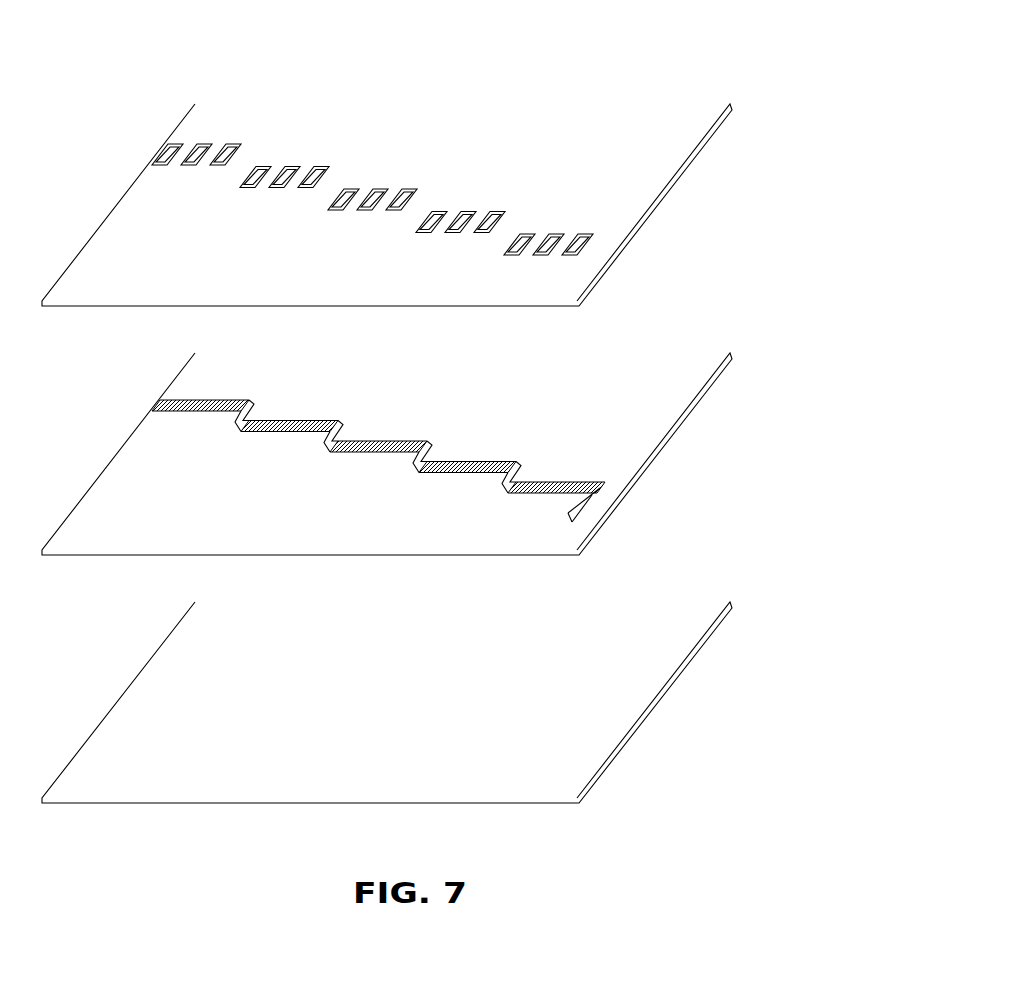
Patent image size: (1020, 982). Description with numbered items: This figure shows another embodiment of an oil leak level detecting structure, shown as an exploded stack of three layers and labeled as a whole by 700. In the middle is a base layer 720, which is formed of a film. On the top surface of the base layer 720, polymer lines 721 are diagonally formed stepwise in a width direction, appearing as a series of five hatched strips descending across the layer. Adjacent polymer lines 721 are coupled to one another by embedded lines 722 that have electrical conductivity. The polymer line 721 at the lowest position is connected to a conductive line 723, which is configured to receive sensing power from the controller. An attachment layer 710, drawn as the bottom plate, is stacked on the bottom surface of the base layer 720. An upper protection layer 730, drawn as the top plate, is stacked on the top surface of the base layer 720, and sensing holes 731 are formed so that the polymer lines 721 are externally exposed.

The antenna module 700 is at (653, 30).
The attachment layer 710 is at (670, 660).
The base layer 720 is at (672, 395).
The polymer lines 721 is at (158, 402).
The embedded lines 722 is at (240, 419).
The conductive line 723 is at (575, 517).
The upper protection layer 730 is at (641, 193).
The sensing holes 731 is at (236, 148).